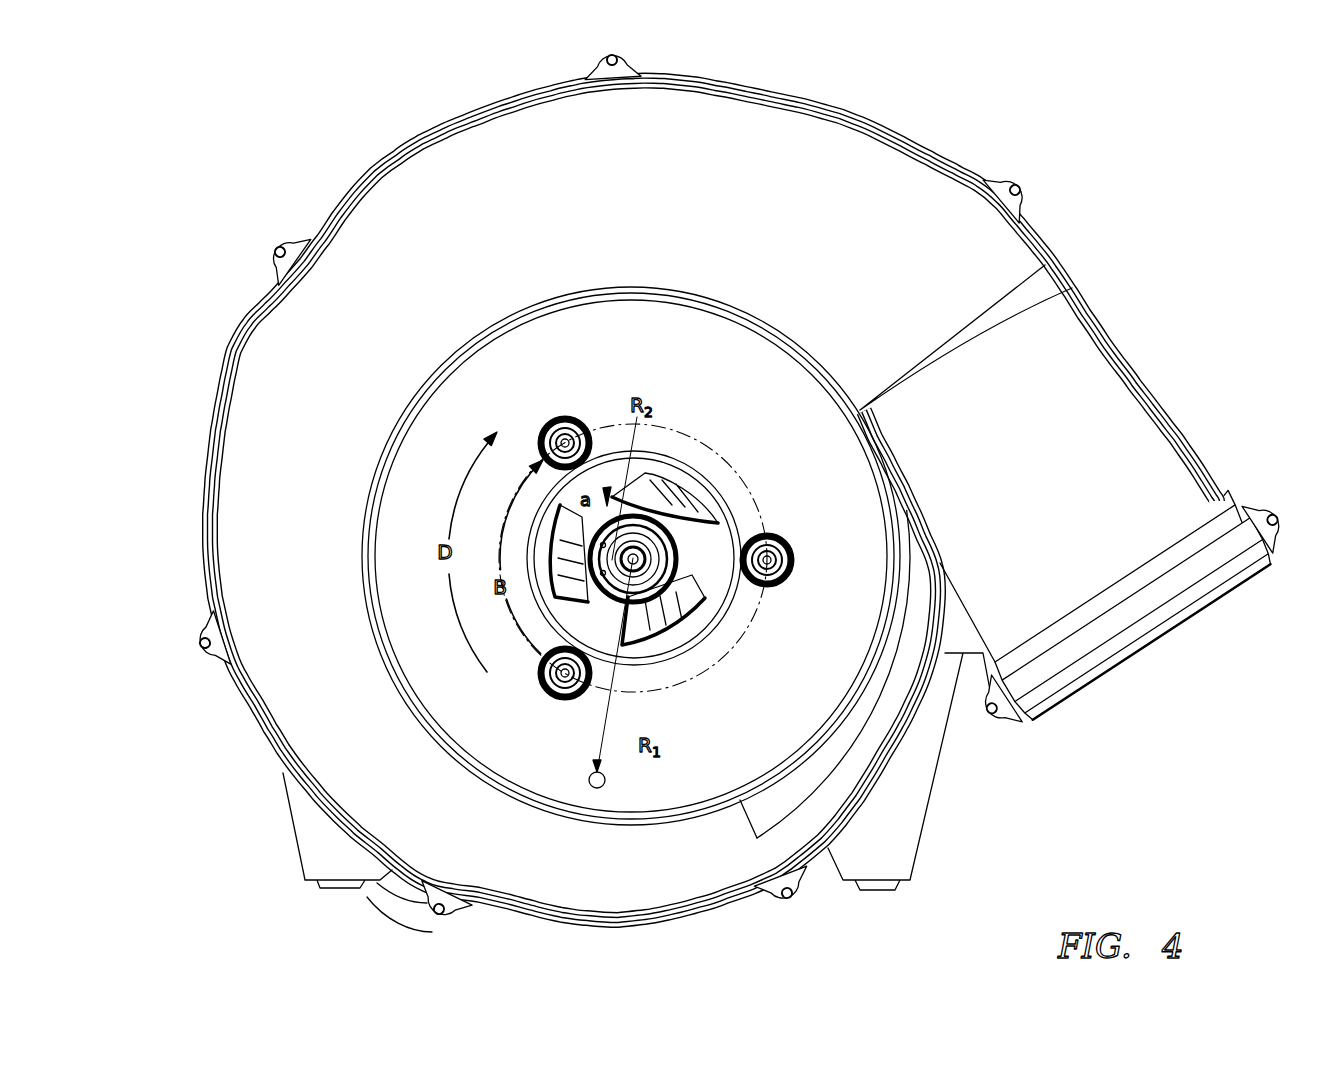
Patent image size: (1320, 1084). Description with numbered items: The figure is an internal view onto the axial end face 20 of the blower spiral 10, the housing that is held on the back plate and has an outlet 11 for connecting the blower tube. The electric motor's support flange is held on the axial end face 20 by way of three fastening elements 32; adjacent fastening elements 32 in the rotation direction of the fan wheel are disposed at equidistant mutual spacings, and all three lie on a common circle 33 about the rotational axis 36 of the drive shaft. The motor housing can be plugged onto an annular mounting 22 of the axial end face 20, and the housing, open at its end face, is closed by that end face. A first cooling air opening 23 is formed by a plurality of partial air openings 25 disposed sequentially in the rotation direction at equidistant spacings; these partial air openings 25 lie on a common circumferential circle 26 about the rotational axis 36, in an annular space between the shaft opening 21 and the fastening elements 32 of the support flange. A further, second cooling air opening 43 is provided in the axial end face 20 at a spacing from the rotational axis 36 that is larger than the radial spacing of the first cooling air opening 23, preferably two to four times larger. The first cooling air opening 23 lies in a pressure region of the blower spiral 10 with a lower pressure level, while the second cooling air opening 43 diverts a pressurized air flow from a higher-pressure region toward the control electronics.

The blower spiral 10 is at (300, 335).
The outlet 11 is at (1154, 662).
The axial end face 20 is at (430, 490).
The shaft opening 21 is at (683, 562).
The annular mounting 22 is at (708, 590).
The cooling air opening 23 is at (663, 612).
The partial air openings 25 is at (690, 632).
The circumferential circle 26 is at (688, 578).
The fastening elements 32 is at (551, 694).
The common circle 33 is at (684, 432).
The rotational axis 36 is at (650, 556).
The further cooling air opening 43 is at (585, 782).